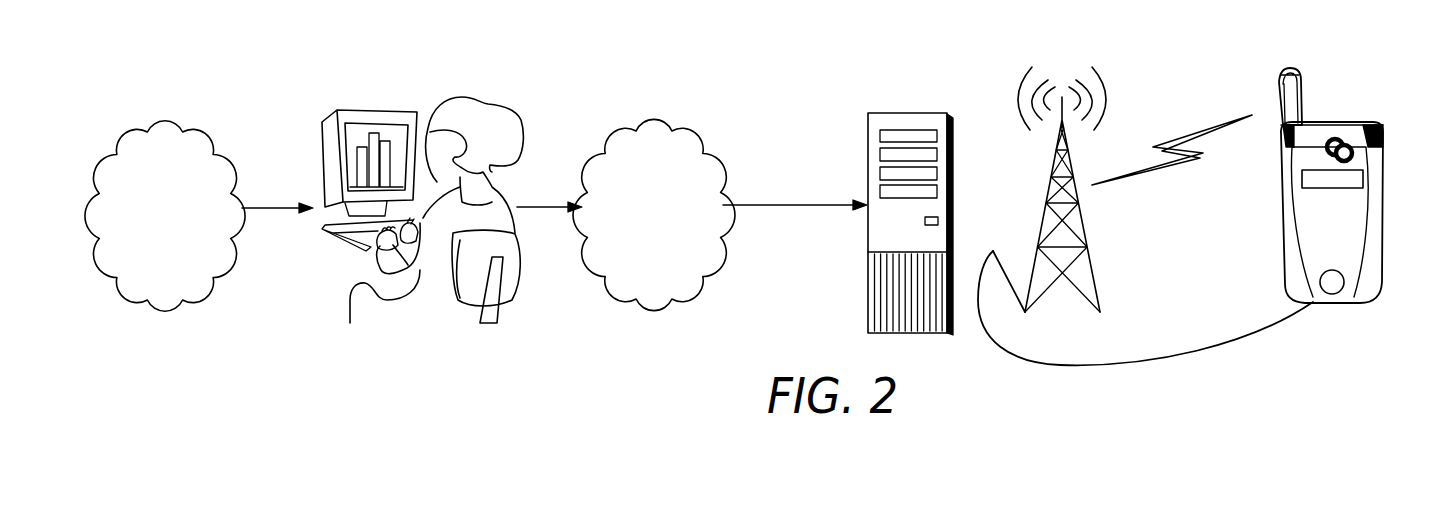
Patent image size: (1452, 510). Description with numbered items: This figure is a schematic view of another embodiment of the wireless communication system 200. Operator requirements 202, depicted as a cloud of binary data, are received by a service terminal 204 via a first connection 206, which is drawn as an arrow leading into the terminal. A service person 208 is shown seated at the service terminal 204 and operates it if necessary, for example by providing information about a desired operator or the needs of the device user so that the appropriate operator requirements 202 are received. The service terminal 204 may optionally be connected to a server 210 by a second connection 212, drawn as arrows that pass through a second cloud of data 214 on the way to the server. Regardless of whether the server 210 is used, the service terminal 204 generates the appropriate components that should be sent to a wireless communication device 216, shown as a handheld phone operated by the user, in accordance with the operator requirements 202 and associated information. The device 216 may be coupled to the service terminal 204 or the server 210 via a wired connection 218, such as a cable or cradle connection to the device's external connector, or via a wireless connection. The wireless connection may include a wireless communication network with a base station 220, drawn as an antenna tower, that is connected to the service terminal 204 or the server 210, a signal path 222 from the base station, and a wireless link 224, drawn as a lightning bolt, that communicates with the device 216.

The system 200 is at (172, 33).
The operator requirements 202 is at (175, 117).
The service terminal 204 is at (370, 110).
The first connection 206 is at (266, 205).
The service person 208 is at (492, 105).
The server 210 is at (910, 114).
The second connection 212 is at (542, 205).
The processed data 214 is at (657, 117).
The wireless communication device 216 is at (1384, 214).
The wired connection 218 is at (1273, 330).
The base station 220 is at (1085, 245).
The signal path 222 is at (1001, 260).
The wireless link 224 is at (1200, 129).